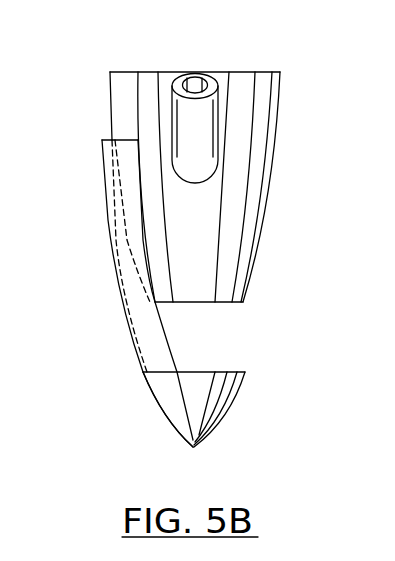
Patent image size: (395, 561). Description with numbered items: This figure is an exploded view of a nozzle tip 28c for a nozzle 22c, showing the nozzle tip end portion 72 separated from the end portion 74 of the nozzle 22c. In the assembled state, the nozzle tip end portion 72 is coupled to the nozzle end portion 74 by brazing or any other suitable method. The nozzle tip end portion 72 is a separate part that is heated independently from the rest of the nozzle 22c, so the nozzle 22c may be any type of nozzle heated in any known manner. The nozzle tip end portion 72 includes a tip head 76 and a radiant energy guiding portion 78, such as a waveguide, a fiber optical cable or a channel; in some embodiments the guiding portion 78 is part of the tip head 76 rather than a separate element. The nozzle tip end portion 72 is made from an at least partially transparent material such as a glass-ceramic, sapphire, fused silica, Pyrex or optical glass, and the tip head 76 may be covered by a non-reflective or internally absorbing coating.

The nozzle 22c is at (300, 89).
The end portion of the nozzle 74 is at (250, 233).
The nozzle tip end portion 72 is at (128, 353).
The radiant energy guiding portion 78 is at (122, 263).
The tip head 76 is at (190, 400).
The nozzle tip 28c is at (222, 391).